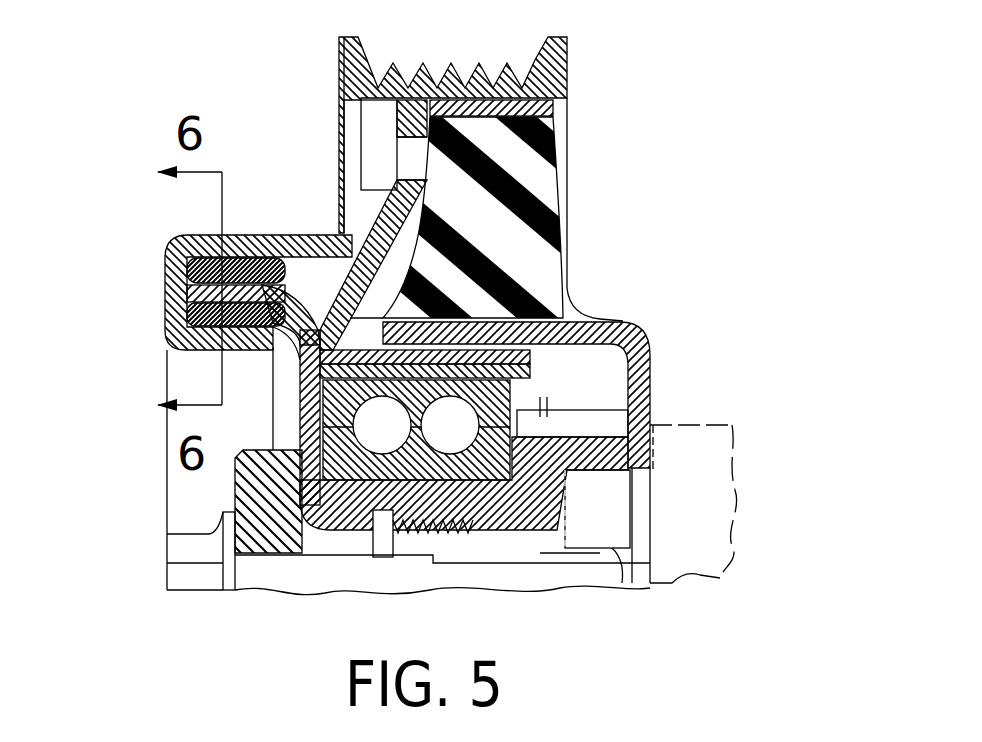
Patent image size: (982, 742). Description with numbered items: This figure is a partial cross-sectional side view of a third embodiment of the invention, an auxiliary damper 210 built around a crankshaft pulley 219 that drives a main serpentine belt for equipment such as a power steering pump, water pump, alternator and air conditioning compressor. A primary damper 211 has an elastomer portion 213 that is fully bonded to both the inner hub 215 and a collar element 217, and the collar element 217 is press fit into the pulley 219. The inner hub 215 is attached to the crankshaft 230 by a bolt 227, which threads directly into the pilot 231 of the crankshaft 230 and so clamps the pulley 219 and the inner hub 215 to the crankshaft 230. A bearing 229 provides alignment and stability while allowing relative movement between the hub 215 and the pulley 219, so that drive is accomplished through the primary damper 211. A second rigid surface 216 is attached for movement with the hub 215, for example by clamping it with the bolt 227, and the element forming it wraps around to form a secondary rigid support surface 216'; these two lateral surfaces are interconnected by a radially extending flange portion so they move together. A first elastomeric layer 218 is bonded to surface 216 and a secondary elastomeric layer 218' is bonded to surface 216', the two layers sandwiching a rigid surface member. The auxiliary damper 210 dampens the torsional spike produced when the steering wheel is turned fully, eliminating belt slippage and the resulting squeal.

The auxiliary damper 210 is at (137, 415).
The primary damper 211 is at (552, 172).
The elastomer portion 213 is at (533, 256).
The inner hub 215 is at (548, 343).
The second rigid, elastomer-layer-bearing rigid surface 216 is at (334, 192).
The secondary rigid support surface 216' is at (257, 388).
The collar element 217 is at (565, 85).
The elastomeric layer 218 is at (230, 275).
The secondary elastomeric layer 218' is at (185, 320).
The crankshaft pulley 219 is at (567, 45).
The bolt 227 is at (183, 547).
The bearing 229 is at (500, 397).
The crankshaft 230 is at (695, 502).
The pilot 231 is at (600, 518).